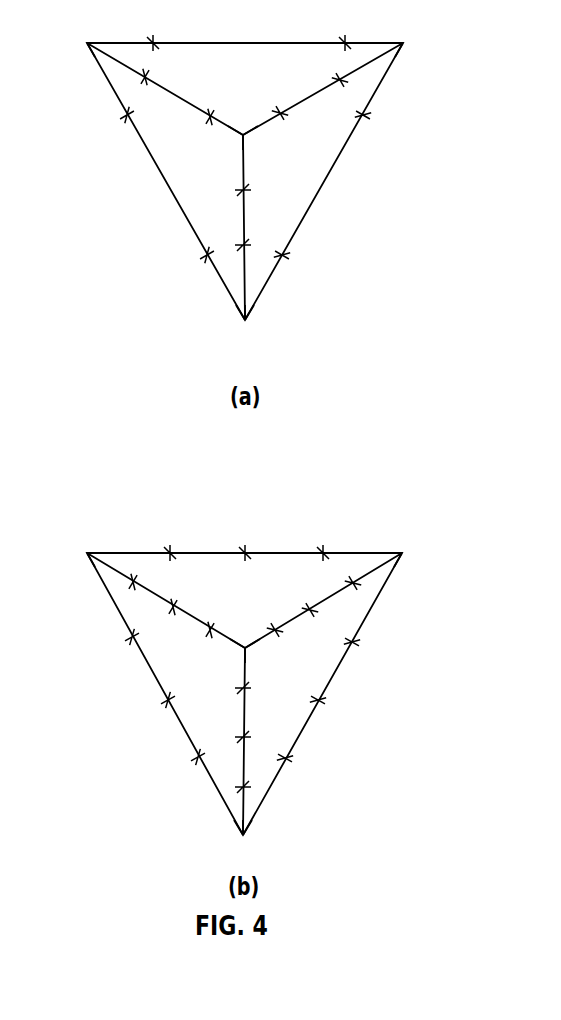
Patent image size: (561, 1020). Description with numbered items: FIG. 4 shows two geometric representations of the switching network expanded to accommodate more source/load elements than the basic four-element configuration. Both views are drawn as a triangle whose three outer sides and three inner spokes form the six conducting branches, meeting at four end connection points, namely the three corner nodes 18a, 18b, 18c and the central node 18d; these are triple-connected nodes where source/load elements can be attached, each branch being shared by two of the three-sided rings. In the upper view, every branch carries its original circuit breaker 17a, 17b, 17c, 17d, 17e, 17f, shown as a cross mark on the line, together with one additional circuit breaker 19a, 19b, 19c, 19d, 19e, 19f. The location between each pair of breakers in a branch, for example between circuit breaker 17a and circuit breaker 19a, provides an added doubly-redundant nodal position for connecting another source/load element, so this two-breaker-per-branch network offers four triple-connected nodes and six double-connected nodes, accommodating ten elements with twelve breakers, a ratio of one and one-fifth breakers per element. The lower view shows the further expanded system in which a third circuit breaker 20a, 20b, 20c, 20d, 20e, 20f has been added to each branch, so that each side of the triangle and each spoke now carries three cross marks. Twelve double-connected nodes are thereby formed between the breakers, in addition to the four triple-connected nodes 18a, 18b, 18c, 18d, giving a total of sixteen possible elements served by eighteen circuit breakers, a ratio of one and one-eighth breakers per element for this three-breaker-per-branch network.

The circuit breaker 17a is at (149, 76).
The circuit breaker 17b is at (348, 40).
The circuit breaker 17c is at (284, 258).
The circuit breaker 17d is at (246, 188).
The circuit breaker 17e is at (337, 79).
The circuit breaker 17f is at (125, 118).
The node 18a is at (87, 43).
The node 18b is at (403, 43).
The node 18c is at (245, 320).
The node 18d is at (241, 138).
The additional circuit breaker 19a is at (208, 120).
The additional circuit breaker 19b is at (156, 40).
The additional circuit breaker 19c is at (365, 118).
The additional circuit breaker 19d is at (246, 244).
The additional circuit breaker 19e is at (282, 116).
The additional circuit breaker 19f is at (204, 258).
The additional circuit breaker 20a is at (207, 631).
The additional circuit breaker 20b is at (168, 550).
The additional circuit breaker 20c is at (355, 644).
The additional circuit breaker 20d is at (240, 789).
The additional circuit breaker 20e is at (278, 632).
The additional circuit breaker 20f is at (196, 758).